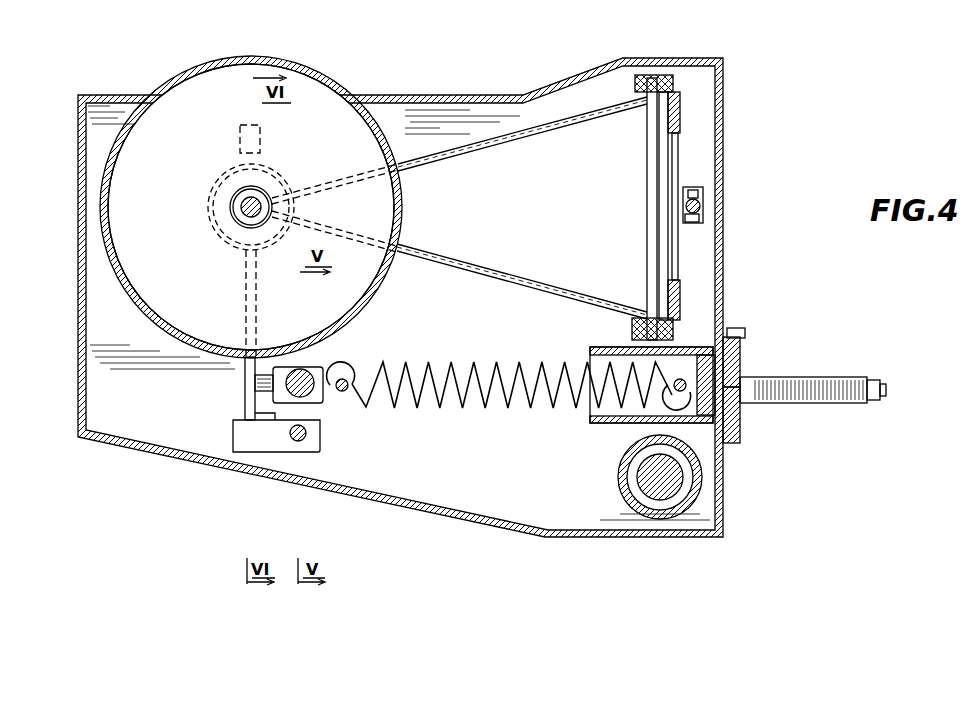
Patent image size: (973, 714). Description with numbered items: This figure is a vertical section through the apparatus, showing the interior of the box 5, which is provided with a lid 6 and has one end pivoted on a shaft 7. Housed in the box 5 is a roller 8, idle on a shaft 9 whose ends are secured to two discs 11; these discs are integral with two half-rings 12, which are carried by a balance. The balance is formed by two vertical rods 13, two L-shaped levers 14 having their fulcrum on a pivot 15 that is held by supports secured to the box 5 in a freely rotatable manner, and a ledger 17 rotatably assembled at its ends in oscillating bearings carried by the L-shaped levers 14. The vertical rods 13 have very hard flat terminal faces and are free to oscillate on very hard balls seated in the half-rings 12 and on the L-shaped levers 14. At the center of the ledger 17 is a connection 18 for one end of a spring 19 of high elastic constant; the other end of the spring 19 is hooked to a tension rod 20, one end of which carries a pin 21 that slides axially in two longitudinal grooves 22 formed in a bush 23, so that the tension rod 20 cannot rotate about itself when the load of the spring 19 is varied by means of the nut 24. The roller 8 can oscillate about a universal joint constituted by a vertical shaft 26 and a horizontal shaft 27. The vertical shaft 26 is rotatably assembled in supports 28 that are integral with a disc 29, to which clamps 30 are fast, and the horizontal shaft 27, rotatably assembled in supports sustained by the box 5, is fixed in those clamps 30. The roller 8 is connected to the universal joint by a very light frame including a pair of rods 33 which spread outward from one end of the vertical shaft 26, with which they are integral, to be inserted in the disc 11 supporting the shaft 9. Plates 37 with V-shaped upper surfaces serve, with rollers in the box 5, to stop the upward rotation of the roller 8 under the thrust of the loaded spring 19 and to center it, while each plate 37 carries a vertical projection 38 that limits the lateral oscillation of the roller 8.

The box 5 is at (723, 120).
The lid 6 is at (571, 78).
The shaft 7 is at (676, 480).
The roller 8 is at (256, 57).
The shaft 9 is at (246, 206).
The discs 11 is at (290, 178).
The half-rings 12 is at (276, 160).
The vertical rods 13 is at (243, 388).
The L-shaped levers 14 is at (248, 446).
The pivot 15 is at (302, 441).
The ledger 17 is at (312, 372).
The connection 18 is at (318, 405).
The spring 19 is at (432, 402).
The tension rod 20 is at (822, 402).
The pin 21 is at (740, 430).
The longitudinal grooves 22 is at (640, 424).
The bush 23 is at (590, 420).
The nut 24 is at (745, 370).
The vertical shaft 26 is at (655, 172).
The horizontal shaft 27 is at (700, 212).
The supports 28 is at (665, 80).
The disc 29 is at (678, 300).
The clamps 30 is at (703, 193).
The rods 33 is at (547, 130).
The plates 37 is at (216, 165).
The vertical projection 38 is at (240, 139).